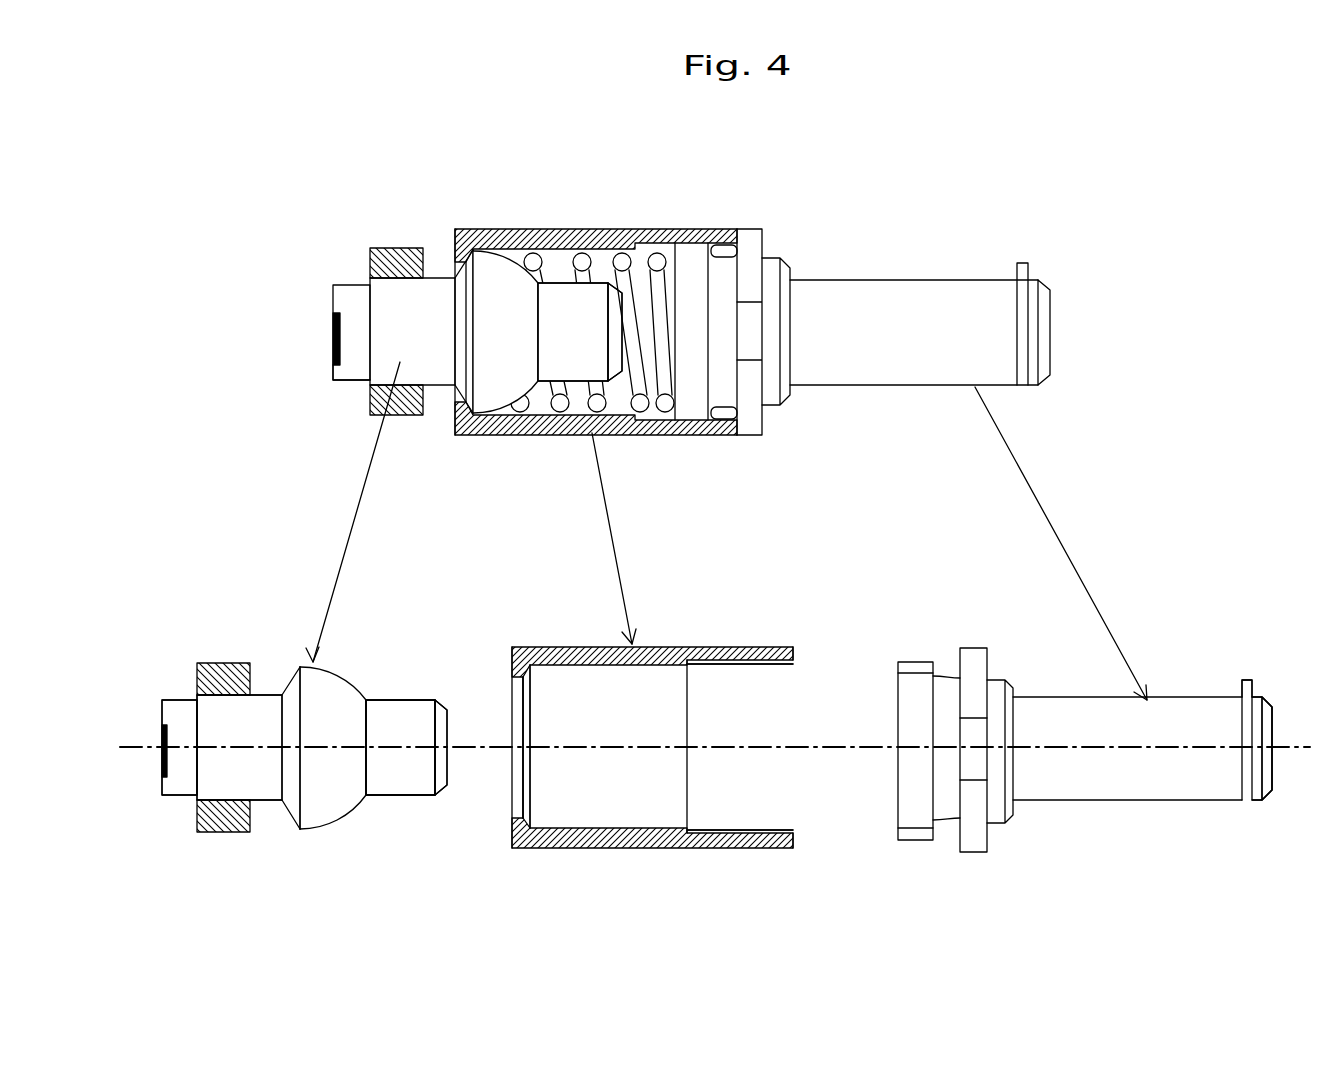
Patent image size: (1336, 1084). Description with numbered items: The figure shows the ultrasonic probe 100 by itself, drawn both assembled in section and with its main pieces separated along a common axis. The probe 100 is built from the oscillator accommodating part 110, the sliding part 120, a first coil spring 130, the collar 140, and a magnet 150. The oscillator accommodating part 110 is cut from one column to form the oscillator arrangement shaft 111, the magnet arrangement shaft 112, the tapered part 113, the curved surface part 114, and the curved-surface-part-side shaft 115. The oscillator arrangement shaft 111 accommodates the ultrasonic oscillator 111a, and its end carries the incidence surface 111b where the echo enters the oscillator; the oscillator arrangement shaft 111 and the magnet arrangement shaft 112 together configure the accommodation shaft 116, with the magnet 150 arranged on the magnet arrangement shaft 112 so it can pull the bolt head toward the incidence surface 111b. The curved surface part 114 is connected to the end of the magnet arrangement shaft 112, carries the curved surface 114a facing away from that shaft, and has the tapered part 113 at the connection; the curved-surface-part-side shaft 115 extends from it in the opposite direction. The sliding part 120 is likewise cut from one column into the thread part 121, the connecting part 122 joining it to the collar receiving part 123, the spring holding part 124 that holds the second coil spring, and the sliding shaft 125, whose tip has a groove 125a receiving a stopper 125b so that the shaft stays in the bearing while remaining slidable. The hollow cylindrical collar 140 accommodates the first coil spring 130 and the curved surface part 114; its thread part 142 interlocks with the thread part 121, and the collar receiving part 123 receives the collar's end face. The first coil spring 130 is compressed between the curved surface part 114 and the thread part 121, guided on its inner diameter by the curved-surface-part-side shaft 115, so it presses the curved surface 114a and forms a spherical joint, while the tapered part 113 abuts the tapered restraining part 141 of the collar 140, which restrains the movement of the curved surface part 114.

The ultrasonic probe 100 is at (1027, 225).
The oscillator accommodating part 110 is at (498, 263).
The oscillator arrangement shaft 111 is at (168, 785).
The ultrasonic oscillator 111a is at (333, 332).
The incidence surface 111b is at (333, 368).
The magnet arrangement shaft 112 is at (245, 787).
The tapered part 113 is at (457, 237).
The curved surface part 114 is at (343, 690).
The curved surface 114a is at (400, 747).
The curved-surface-part-side shaft 115 is at (388, 712).
The accommodation shaft 116 is at (112, 903).
The sliding part 120 is at (880, 288).
The thread part 121 is at (905, 660).
The connecting part 122 is at (947, 827).
The collar receiving part 123 is at (968, 647).
The spring holding part 124 is at (997, 680).
The sliding shaft 125 is at (1163, 697).
The groove 125a is at (1248, 798).
The stopper 125b is at (1250, 680).
The first coil spring 130 is at (582, 253).
The collar 140 is at (707, 229).
The restraining part 141 is at (530, 667).
The thread part 142 is at (767, 667).
The magnet 150 is at (383, 247).